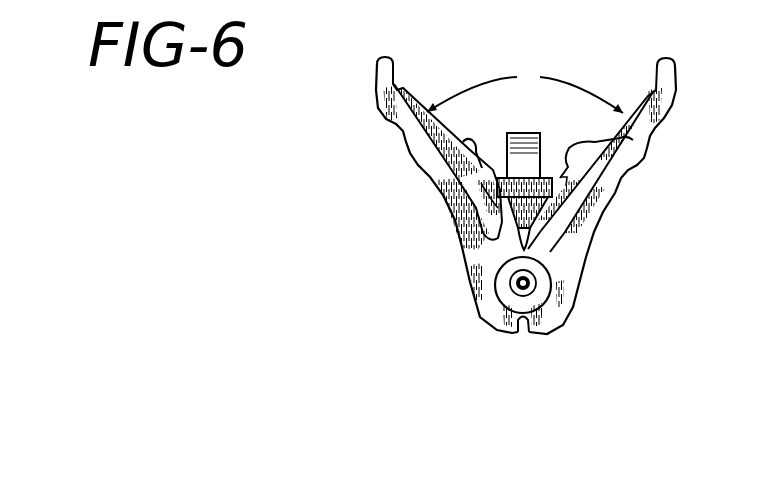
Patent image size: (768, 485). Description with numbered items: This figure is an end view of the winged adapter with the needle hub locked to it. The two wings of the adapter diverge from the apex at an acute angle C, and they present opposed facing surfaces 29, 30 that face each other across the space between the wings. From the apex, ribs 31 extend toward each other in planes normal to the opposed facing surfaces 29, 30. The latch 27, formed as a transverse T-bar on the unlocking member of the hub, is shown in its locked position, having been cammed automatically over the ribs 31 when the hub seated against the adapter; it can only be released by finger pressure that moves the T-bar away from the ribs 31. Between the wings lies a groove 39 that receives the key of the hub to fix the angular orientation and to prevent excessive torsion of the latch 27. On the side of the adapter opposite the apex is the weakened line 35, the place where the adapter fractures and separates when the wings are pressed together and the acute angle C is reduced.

The latch 27 is at (510, 132).
The opposed facing surface 29 is at (400, 90).
The opposed facing surface 30 is at (643, 93).
The ribs 31 is at (463, 142).
The weakened line 35 is at (530, 247).
The groove 39 is at (490, 213).
The acute angle C is at (525, 88).